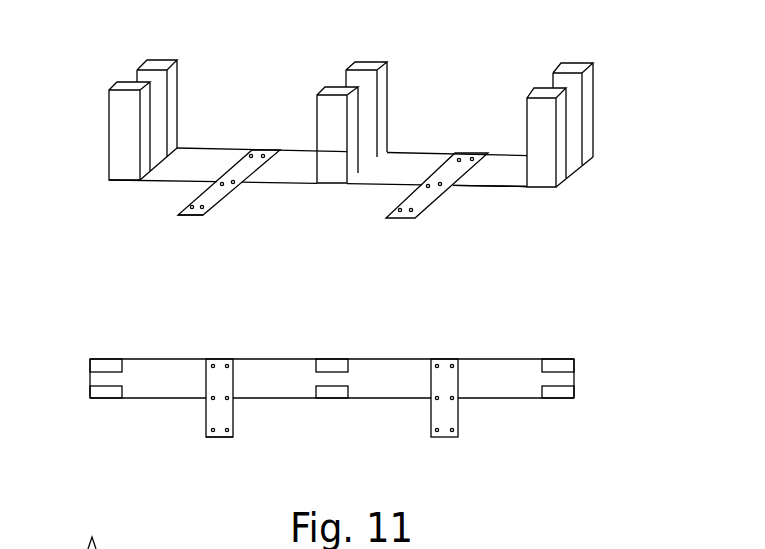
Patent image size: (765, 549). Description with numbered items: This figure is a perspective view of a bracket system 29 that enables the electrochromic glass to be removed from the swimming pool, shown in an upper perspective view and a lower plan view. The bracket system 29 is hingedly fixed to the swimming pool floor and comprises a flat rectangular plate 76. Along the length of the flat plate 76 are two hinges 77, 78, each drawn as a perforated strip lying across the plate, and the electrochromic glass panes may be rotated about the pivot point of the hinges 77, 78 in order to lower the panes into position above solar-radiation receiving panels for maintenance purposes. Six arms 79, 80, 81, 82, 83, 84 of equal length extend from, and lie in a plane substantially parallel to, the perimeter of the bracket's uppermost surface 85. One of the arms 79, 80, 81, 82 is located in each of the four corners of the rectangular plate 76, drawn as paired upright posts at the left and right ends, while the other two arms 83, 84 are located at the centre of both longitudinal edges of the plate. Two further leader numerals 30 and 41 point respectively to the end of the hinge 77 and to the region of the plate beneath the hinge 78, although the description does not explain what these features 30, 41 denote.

The bracket system 29 is at (417, 83).
The bracket end 30 is at (182, 208).
The base plate 41 is at (448, 205).
The flat rectangular plate 76 is at (300, 155).
The hinge 77 is at (222, 197).
The hinge 78 is at (400, 210).
The arm 79 is at (150, 63).
The arm 80 is at (582, 69).
The arm 81 is at (558, 105).
The arm 82 is at (118, 98).
The arm 83 is at (325, 185).
The arm 84 is at (372, 68).
The uppermost surface 85 is at (195, 158).